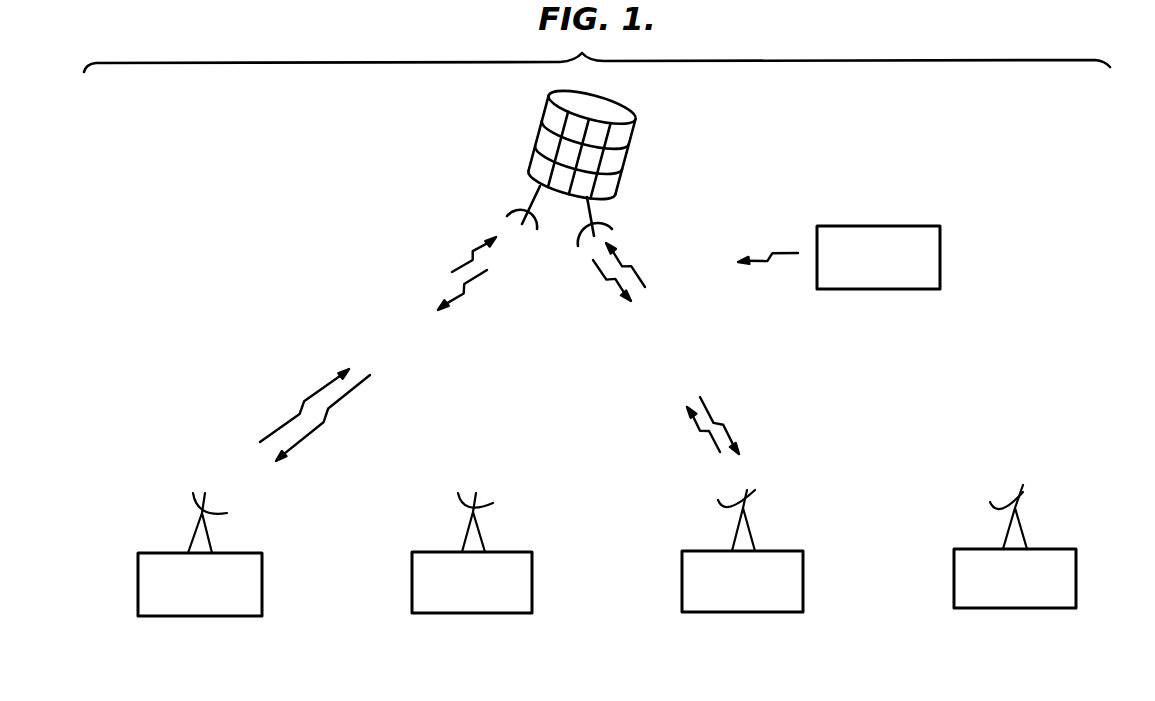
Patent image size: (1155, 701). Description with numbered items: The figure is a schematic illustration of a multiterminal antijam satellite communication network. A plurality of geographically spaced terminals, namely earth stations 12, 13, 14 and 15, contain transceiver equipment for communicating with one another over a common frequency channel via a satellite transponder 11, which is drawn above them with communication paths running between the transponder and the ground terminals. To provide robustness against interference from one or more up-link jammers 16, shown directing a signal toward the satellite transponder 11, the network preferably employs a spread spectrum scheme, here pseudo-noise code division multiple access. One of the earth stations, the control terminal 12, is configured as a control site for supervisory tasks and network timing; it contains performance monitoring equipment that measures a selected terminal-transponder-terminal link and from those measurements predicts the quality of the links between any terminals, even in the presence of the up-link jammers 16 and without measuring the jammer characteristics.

The satellite transponder 11 is at (634, 118).
The control terminal 12 is at (262, 560).
The earth station 13 is at (412, 595).
The earth station 14 is at (682, 574).
The earth station 15 is at (1076, 568).
The up-link jammer 16 is at (940, 243).